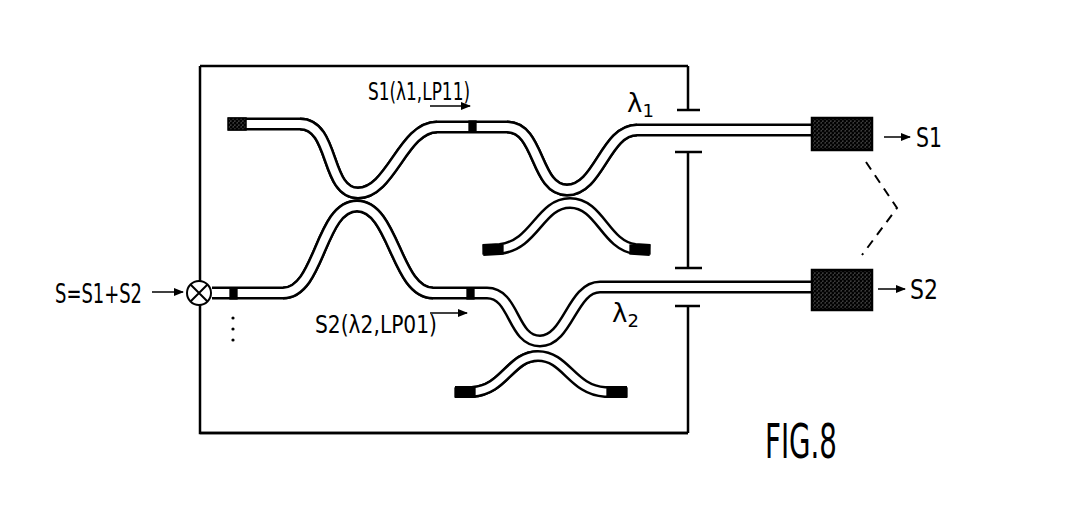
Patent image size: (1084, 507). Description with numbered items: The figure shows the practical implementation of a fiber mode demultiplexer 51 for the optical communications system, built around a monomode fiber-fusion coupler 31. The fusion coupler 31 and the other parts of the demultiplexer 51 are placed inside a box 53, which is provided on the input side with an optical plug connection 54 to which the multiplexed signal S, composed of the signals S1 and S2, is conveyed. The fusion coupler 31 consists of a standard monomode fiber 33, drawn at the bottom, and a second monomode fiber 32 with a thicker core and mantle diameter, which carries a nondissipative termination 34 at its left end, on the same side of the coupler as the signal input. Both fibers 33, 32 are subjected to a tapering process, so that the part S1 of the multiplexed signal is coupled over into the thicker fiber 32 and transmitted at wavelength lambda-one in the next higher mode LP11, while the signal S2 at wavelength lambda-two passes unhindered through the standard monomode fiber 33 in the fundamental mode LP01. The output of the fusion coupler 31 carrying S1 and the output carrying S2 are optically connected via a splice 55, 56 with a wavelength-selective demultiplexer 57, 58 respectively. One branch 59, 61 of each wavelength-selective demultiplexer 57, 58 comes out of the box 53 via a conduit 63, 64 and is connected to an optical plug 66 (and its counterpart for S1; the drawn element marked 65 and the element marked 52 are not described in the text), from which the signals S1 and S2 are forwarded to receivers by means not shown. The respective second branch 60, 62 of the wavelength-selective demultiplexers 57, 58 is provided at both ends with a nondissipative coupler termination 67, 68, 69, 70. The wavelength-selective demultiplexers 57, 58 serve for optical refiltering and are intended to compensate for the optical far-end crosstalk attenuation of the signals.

The monomode fiber-fusion coupler 31 is at (352, 118).
The monomode fiber with thicker core and mantle diameter 32 is at (295, 117).
The standard monomode fiber 33 is at (285, 290).
The nondissipative termination 34 is at (228, 124).
The fiber mode demultiplexer 51 is at (548, 57).
The wavelength filter section 52 is at (598, 103).
The box 53 is at (288, 420).
The optical plug connection 54 is at (192, 305).
The splice 55 is at (485, 118).
The splice 56 is at (468, 288).
The wavelength-selective demultiplexer 57 is at (568, 183).
The wavelength-selective demultiplexer 58 is at (545, 362).
The branch 59 is at (663, 136).
The second branch 60 is at (540, 222).
The branch 61 is at (663, 295).
The second branch 62 is at (492, 385).
The conduit 63 is at (705, 110).
The conduit 64 is at (697, 306).
The detector 65 is at (843, 118).
The optical plug 66 is at (843, 310).
The nondissipative coupler termination 67 is at (493, 243).
The nondissipative coupler termination 68 is at (643, 245).
The nondissipative coupler termination 69 is at (468, 400).
The nondissipative coupler termination 70 is at (623, 400).